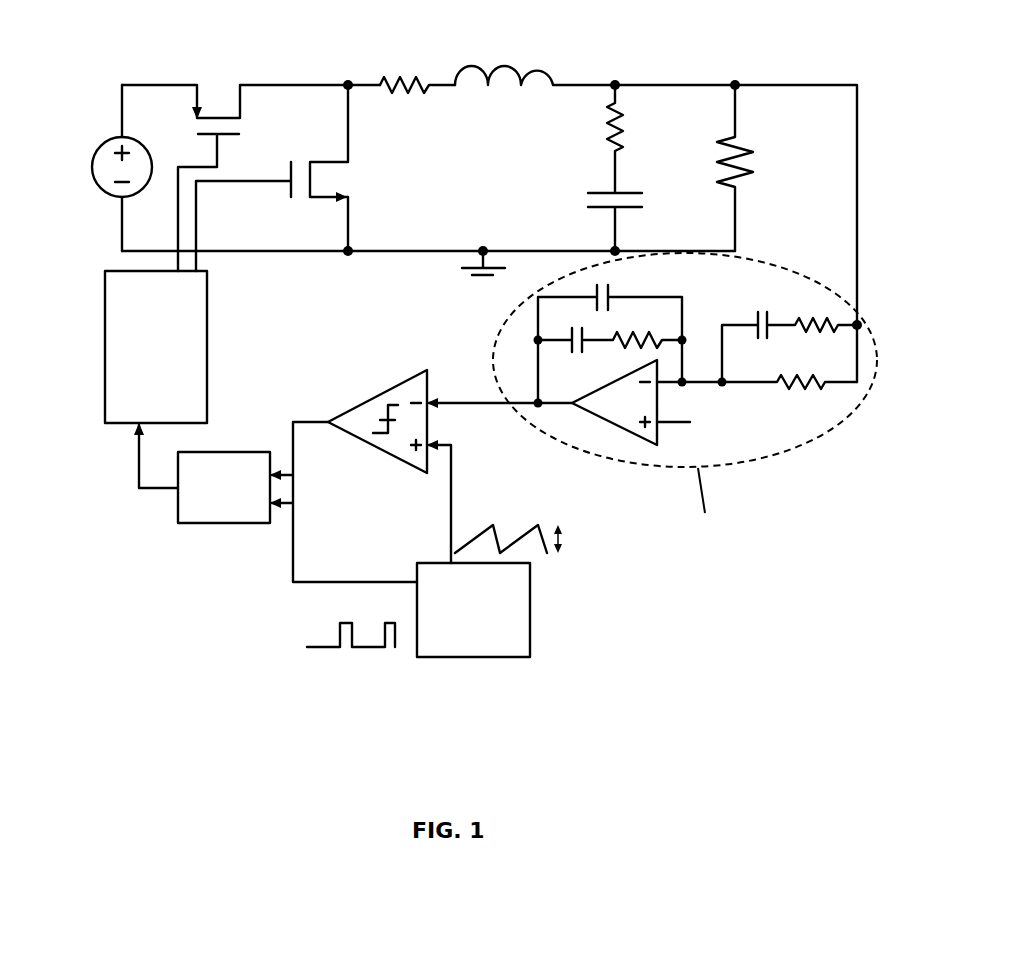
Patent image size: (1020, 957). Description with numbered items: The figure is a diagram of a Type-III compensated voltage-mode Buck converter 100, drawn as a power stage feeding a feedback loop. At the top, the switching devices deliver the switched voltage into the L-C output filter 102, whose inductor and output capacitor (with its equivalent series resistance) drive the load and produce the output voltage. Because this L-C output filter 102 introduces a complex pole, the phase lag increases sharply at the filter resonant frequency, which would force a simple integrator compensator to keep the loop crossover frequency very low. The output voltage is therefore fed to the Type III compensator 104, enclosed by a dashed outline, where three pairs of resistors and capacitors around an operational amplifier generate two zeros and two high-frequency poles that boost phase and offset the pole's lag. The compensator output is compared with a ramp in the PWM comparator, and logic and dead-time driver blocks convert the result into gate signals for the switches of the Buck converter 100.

The Buck converter 100 is at (187, 572).
The L-C output filter 102 is at (628, 52).
The Type III compensator 104 is at (620, 475).